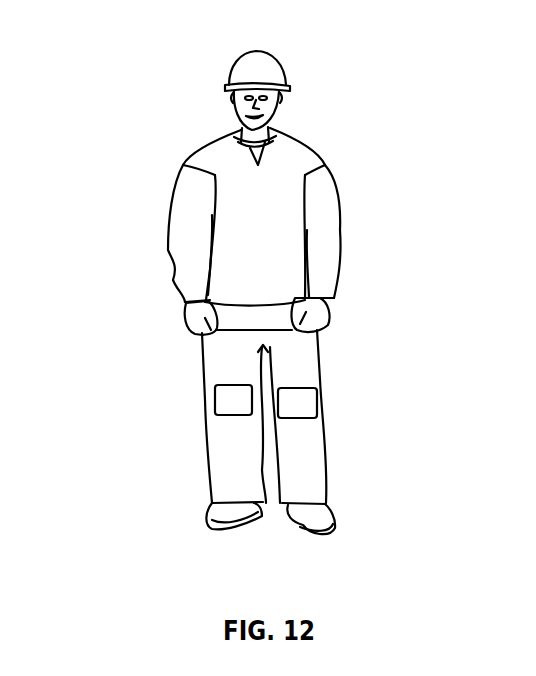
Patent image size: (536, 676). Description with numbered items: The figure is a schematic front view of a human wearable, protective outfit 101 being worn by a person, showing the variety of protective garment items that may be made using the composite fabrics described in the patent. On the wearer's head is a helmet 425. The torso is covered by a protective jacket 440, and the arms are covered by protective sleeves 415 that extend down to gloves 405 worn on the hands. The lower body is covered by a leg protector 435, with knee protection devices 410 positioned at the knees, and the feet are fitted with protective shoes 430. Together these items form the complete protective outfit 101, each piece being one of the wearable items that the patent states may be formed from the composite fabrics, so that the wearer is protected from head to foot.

The human wearable, protective outfit 101 is at (251, 307).
The gloves 405 is at (185, 323).
The knee protection devices 410 is at (222, 397).
The protective sleeves 415 is at (178, 176).
The helmet 425 is at (285, 73).
The protective shoes 430 is at (335, 521).
The leg protector 435 is at (320, 356).
The protective jacket 440 is at (236, 204).